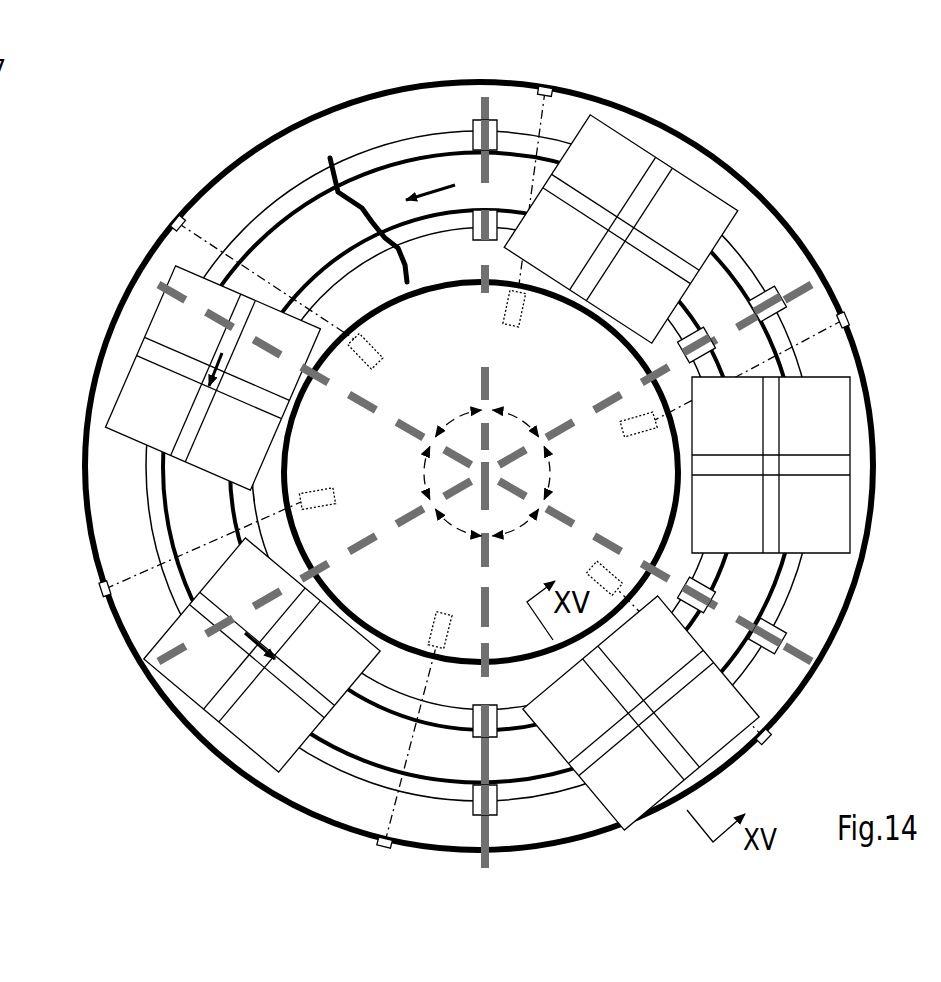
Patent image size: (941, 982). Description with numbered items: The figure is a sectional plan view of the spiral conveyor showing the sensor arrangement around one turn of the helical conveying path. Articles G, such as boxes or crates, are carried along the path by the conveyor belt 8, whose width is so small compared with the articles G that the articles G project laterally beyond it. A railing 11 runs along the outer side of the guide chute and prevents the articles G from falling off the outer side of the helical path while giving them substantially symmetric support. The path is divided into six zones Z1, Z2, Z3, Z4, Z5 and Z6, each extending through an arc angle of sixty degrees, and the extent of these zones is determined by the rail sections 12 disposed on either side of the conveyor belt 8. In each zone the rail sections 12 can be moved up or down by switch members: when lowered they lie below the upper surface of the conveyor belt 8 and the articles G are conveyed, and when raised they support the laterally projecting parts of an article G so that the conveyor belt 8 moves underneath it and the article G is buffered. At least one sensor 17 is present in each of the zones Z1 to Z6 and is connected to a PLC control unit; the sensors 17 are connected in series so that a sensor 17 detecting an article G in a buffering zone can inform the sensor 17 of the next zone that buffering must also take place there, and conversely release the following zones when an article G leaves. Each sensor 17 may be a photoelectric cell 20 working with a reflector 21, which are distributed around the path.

The railing 11 is at (785, 215).
The rail sections 12 is at (752, 282).
The conveyor belt 8 is at (760, 590).
The sensor 17 is at (537, 303).
The photoelectric cell 20 is at (508, 308).
The reflector 21 is at (507, 467).
The article G is at (512, 472).
The zone Z1 is at (522, 411).
The zone Z2 is at (567, 472).
The zone Z3 is at (526, 531).
The zone Z4 is at (458, 539).
The zone Z5 is at (410, 472).
The zone Z6 is at (450, 412).